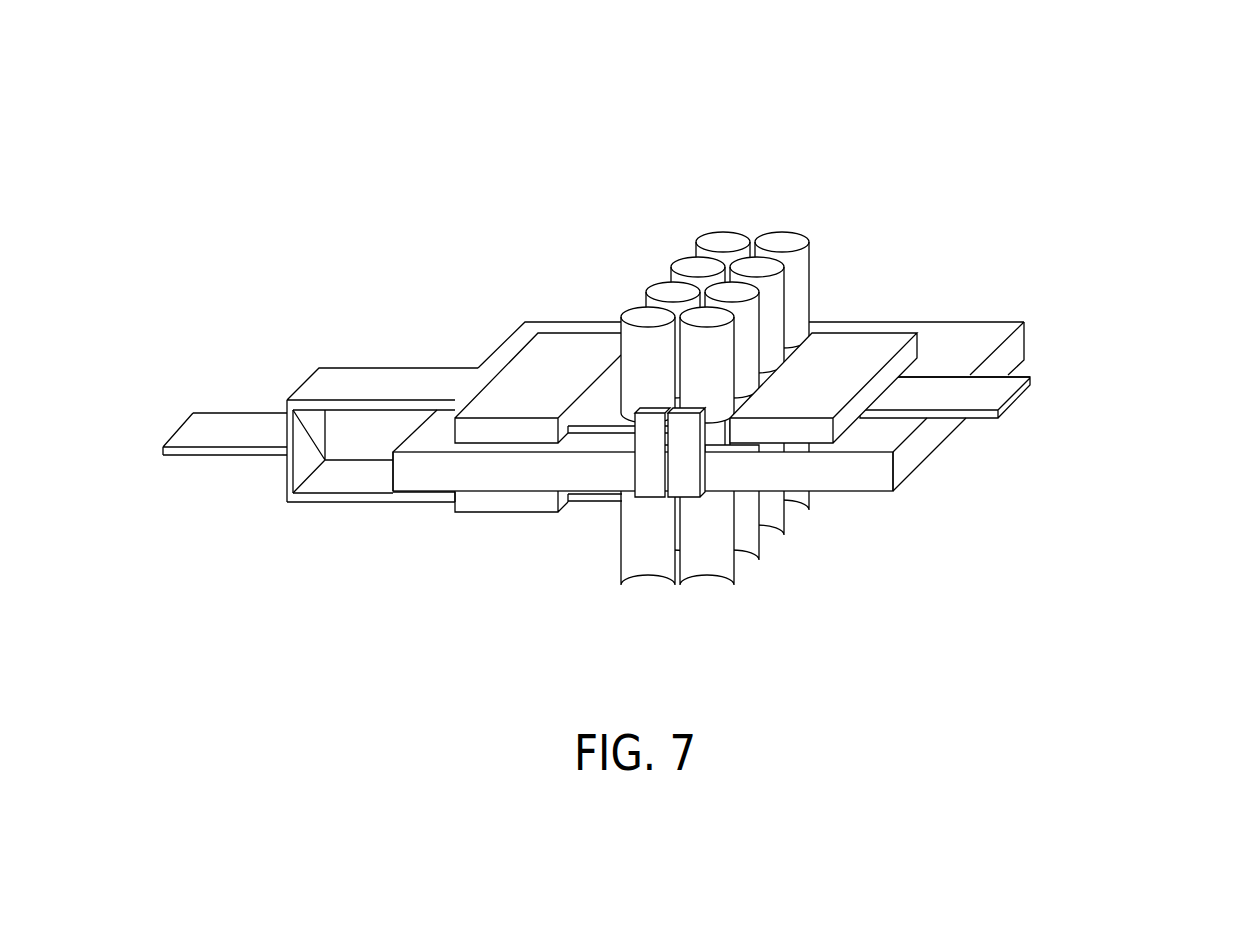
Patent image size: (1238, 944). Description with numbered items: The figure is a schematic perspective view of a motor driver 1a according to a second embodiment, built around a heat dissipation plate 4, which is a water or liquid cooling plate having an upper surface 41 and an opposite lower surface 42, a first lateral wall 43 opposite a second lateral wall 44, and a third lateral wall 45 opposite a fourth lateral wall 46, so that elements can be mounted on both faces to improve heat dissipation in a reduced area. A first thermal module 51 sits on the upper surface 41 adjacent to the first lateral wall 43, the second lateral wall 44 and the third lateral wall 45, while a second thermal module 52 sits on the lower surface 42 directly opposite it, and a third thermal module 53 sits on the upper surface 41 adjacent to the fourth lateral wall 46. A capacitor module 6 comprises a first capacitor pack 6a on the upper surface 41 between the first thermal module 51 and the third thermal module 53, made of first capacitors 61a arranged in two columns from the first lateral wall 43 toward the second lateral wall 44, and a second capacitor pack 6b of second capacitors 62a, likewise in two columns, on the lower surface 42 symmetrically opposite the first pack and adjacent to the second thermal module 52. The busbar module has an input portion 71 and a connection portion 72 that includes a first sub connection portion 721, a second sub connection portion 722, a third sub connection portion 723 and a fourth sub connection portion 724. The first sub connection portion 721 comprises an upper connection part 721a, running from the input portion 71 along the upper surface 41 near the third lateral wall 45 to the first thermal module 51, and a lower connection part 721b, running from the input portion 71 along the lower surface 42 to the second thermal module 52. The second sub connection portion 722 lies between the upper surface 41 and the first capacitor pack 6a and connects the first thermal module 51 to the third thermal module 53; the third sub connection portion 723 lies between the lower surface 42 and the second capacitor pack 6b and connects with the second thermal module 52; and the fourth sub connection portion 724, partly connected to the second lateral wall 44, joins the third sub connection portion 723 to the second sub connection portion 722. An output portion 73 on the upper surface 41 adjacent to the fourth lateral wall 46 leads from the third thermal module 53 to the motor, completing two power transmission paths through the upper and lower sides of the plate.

The motor driver 1a is at (1180, 130).
The heat dissipation plate 4 is at (643, 494).
The upper surface 41 is at (991, 314).
The lower surface 42 is at (1032, 371).
The first lateral wall 43 is at (1035, 337).
The second lateral wall 44 is at (883, 488).
The third lateral wall 45 is at (380, 473).
The fourth lateral wall 46 is at (913, 462).
The first thermal module 51 is at (563, 357).
The second thermal module 52 is at (483, 500).
The third thermal module 53 is at (867, 347).
The capacitor module 6 is at (643, 374).
The first capacitor pack 6a is at (727, 262).
The second capacitor pack 6b is at (715, 561).
The first capacitors 61a is at (822, 156).
The second capacitors 62a is at (757, 670).
The input portion 71 is at (200, 427).
The connection portion 72 is at (315, 297).
The first sub connection portion 721 is at (359, 361).
The upper connection part 721a is at (377, 386).
The lower connection part 721b is at (342, 477).
The second sub connection portion 722 is at (598, 413).
The third sub connection portion 723 is at (598, 500).
The fourth sub connection portion 724 is at (652, 432).
The output portion 73 is at (990, 393).